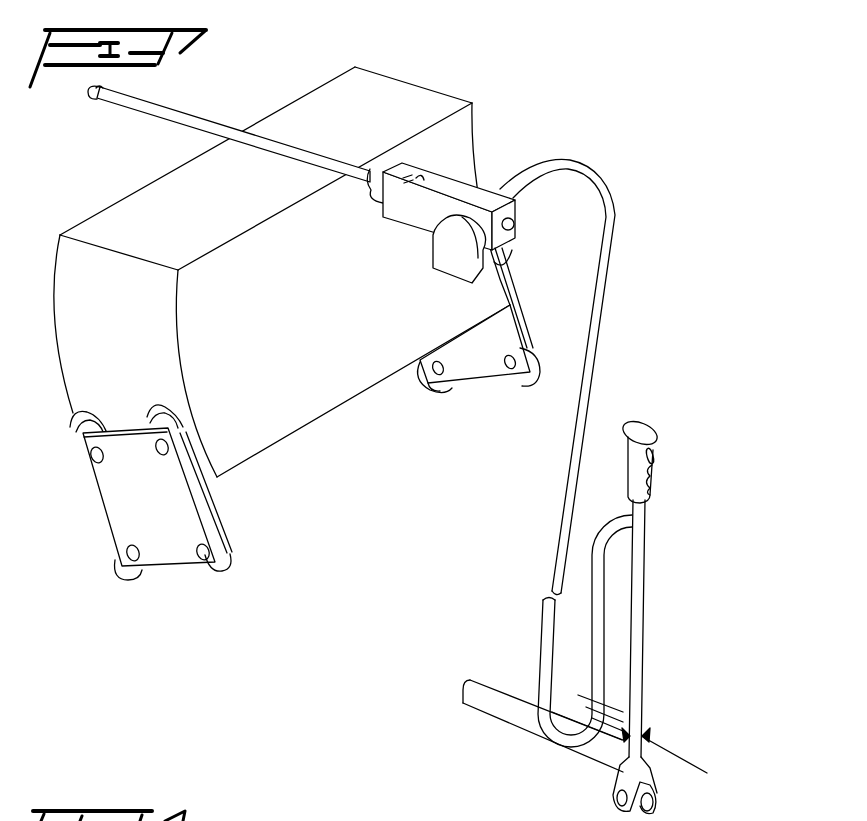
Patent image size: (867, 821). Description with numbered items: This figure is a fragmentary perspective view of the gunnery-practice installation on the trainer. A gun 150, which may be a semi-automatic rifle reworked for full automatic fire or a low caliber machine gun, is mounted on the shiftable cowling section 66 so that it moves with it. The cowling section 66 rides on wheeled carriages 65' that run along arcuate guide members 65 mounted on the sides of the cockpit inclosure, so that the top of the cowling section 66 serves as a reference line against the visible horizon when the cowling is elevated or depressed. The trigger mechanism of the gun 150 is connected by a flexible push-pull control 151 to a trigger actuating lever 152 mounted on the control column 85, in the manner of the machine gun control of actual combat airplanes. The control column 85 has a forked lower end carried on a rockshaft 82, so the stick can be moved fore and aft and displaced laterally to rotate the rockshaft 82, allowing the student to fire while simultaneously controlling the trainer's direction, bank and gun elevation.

The gun 150 is at (170, 113).
The flexible push-pull control 151 is at (600, 317).
The trigger actuating lever 152 is at (658, 455).
The control column 85 is at (641, 633).
The rockshaft 82 is at (512, 725).
The shiftable cowling section 66 is at (263, 447).
The arcuate guide members 65 is at (479, 358).
The wheeled carriages 65' is at (146, 492).